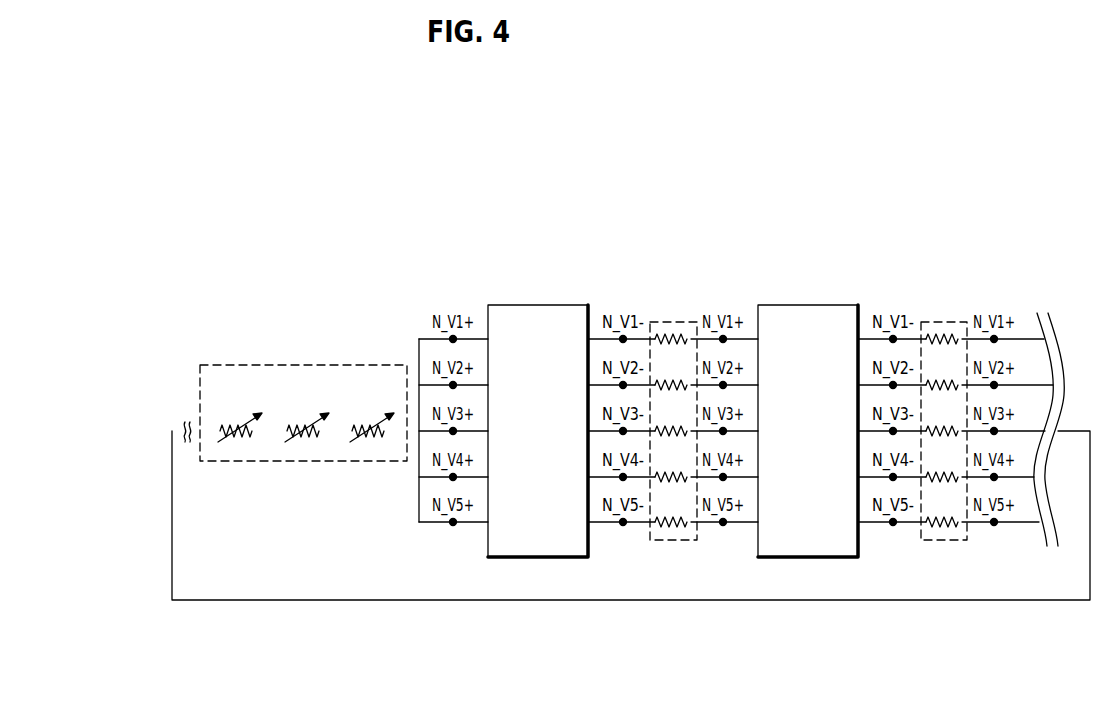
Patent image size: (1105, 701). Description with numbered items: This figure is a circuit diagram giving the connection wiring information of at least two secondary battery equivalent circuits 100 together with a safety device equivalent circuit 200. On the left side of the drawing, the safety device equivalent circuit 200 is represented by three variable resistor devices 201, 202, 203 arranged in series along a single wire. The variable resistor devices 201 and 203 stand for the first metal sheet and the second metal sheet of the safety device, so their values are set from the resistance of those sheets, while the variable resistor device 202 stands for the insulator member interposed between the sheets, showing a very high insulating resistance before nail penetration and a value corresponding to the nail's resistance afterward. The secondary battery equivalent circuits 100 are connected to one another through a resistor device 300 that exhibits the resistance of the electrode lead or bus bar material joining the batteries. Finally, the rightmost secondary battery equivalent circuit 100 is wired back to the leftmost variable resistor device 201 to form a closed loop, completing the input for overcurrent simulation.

The secondary battery equivalent circuit 100 is at (558, 305).
The safety device equivalent circuit 200 is at (343, 365).
The variable resistor device 201 is at (236, 419).
The variable resistor device 202 is at (300, 419).
The variable resistor device 203 is at (365, 419).
The resistor device 300 is at (679, 322).